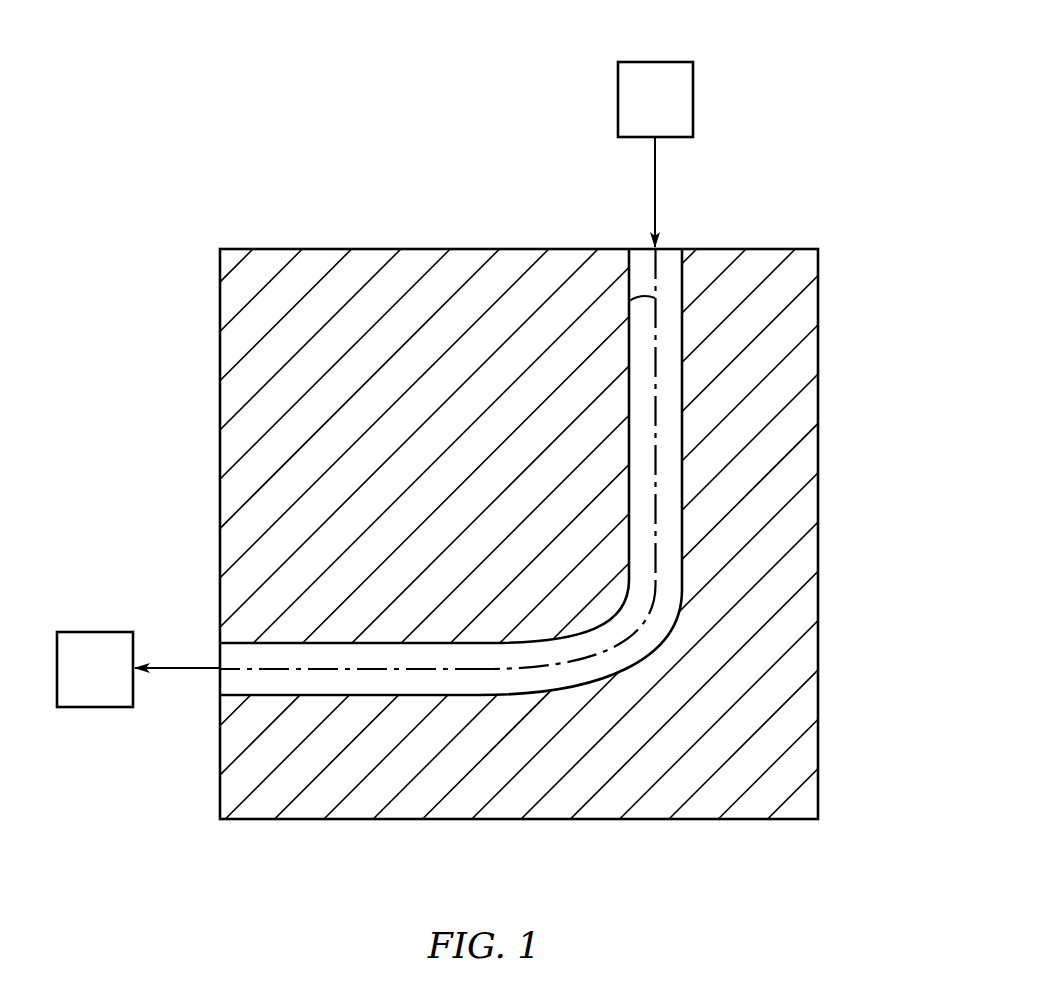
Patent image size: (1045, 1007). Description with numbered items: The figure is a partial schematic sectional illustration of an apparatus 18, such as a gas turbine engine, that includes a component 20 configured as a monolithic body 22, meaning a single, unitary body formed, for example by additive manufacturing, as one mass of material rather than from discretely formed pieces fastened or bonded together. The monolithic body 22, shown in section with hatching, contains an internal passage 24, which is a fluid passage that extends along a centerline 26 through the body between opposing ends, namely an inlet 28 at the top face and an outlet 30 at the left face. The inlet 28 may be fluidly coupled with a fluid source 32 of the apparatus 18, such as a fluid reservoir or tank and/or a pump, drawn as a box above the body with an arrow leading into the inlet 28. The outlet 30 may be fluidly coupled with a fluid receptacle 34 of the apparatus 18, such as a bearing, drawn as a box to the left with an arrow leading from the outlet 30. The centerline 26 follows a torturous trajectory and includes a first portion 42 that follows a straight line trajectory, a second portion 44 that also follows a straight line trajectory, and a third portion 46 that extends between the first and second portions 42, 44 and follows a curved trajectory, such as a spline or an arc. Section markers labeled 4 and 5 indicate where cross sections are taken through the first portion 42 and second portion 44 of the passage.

The apparatus 18 is at (404, 88).
The component 20 is at (822, 230).
The monolithic body 22 is at (821, 272).
The internal passage 24 is at (668, 282).
The centerline 26 is at (627, 302).
The inlet 28 is at (669, 249).
The outlet 30 is at (218, 684).
The fluid source 32 is at (671, 114).
The fluid receptacle 34 is at (111, 684).
The first portion 42 is at (658, 514).
The second portion 44 is at (425, 672).
The third portion 46 is at (621, 643).
The section line 4- 4 is at (617, 413).
The section line 5- 5 is at (367, 633).